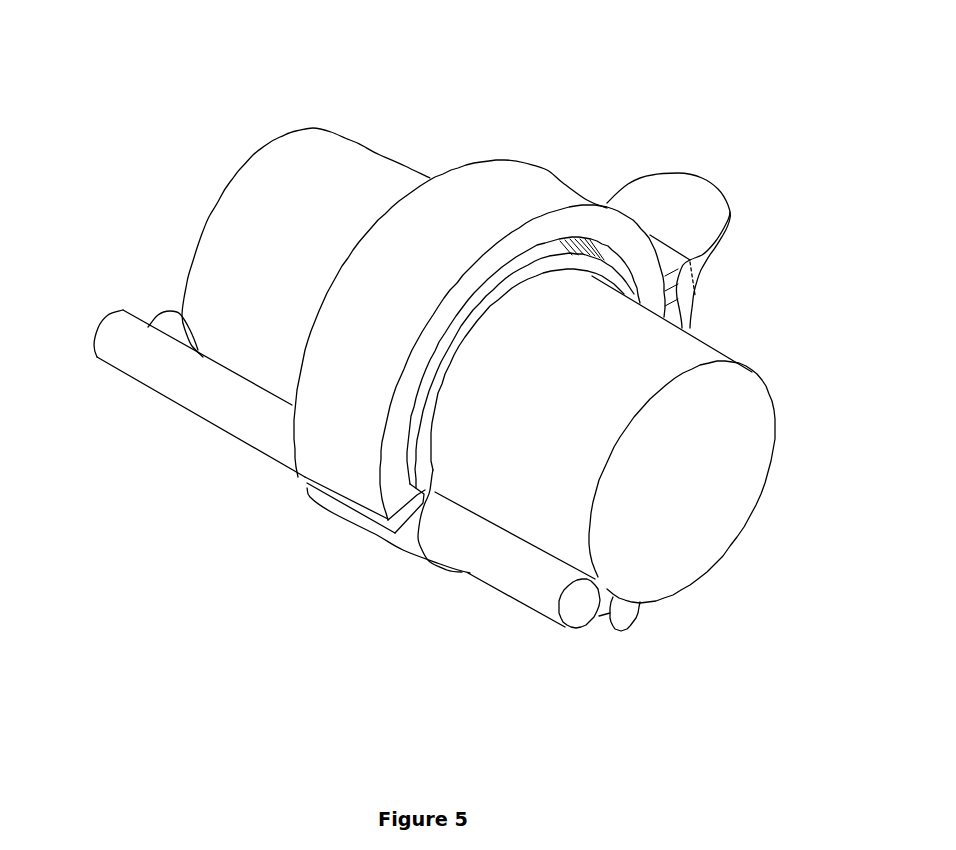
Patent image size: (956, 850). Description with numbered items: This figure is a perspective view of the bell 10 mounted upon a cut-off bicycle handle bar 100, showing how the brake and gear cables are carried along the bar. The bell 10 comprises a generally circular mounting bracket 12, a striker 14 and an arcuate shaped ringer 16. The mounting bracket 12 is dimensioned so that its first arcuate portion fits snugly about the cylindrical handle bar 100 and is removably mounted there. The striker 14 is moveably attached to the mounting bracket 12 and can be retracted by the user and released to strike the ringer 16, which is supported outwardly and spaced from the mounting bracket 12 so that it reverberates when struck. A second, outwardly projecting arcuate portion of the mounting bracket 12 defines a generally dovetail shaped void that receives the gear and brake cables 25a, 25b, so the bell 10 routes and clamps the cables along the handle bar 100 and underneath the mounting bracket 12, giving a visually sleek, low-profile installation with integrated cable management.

The bell 10 is at (546, 107).
The mounting bracket 12 is at (415, 560).
The striker 14 is at (705, 180).
The ringer 16 is at (443, 170).
The cable 25a is at (570, 610).
The cable 25b is at (627, 610).
The handle bar 100 is at (738, 533).